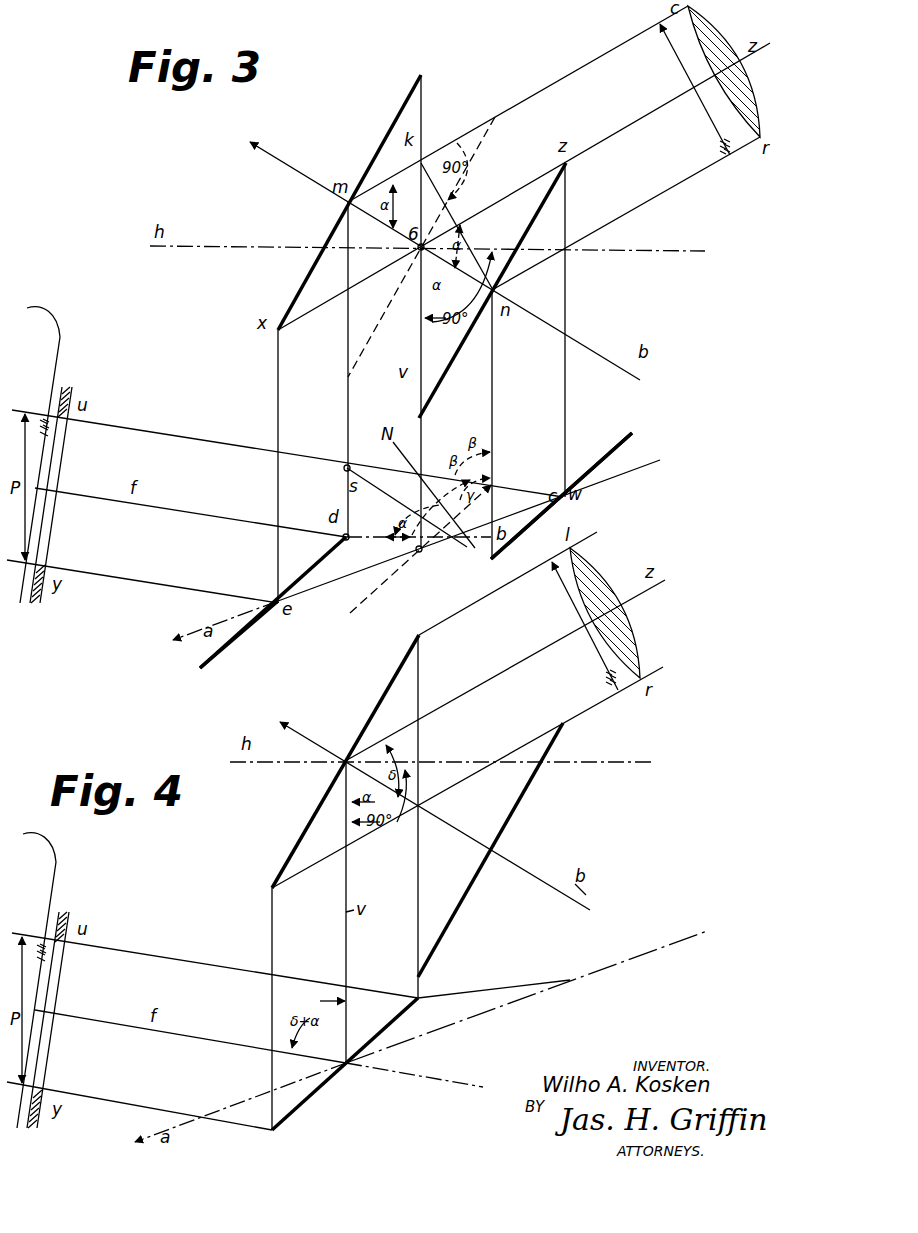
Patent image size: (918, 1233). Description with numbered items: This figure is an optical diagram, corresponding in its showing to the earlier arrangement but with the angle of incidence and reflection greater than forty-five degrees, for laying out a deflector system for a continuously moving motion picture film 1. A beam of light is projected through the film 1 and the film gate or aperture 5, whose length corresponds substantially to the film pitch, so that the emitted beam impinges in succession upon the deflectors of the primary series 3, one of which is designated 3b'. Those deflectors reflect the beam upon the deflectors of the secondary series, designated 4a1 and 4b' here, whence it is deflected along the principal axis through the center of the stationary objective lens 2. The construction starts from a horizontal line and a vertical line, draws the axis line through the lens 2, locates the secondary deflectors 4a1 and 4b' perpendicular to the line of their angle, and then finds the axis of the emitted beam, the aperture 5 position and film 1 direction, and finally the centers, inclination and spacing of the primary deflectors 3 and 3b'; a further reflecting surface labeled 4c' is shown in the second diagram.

In FIG. 3, the motion picture film 1 is at (33, 307).
In FIG. 4, the motion picture film 1 is at (29, 833).
In FIG. 3, the objective lens 2 is at (744, 102).
In FIG. 4, the objective lens 2 is at (633, 648).
In FIG. 3, the deflectors of the primary series 3 is at (611, 456).
In FIG. 3, the primary series deflector 3b' is at (428, 554).
In FIG. 4, the primary series deflector 3b' is at (345, 1064).
In FIG. 3, the secondary series deflector 4a1 is at (349, 202).
In FIG. 3, the secondary series deflector 4b' is at (510, 290).
In FIG. 4, the secondary series deflector 4b' is at (345, 761).
In FIG. 4, the third reflecting surface of upper reflector 4c' is at (498, 850).
In FIG. 3, the film gate or aperture 5 is at (50, 520).
In FIG. 4, the film gate or aperture 5 is at (47, 1045).